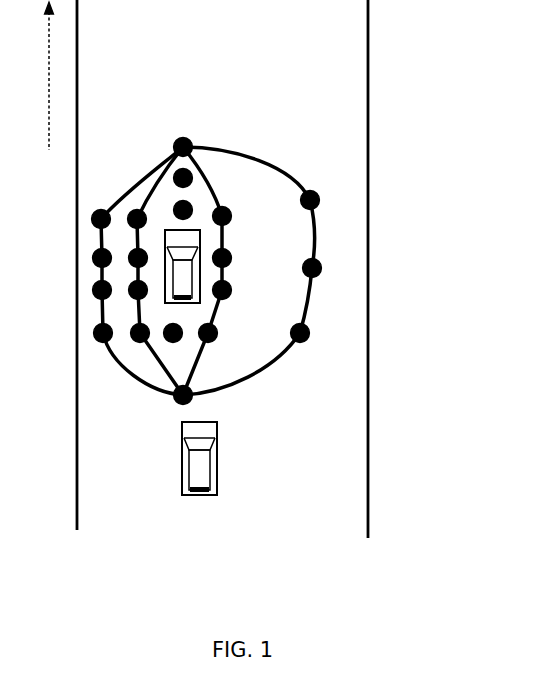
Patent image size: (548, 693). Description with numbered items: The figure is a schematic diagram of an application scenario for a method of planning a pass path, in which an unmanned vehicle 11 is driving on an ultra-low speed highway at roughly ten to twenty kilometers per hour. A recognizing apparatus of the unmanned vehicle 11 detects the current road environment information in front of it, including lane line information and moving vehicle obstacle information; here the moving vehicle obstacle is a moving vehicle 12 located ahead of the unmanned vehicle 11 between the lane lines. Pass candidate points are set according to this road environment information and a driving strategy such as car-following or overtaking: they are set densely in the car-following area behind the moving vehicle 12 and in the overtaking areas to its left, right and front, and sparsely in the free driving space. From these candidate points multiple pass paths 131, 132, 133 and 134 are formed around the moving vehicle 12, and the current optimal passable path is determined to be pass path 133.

The unmanned vehicle 11 is at (260, 510).
The moving vehicle 12 is at (252, 353).
The pass path 131 is at (142, 203).
The pass path 132 is at (199, 198).
The pass path 133 is at (253, 218).
The pass path 134 is at (319, 253).